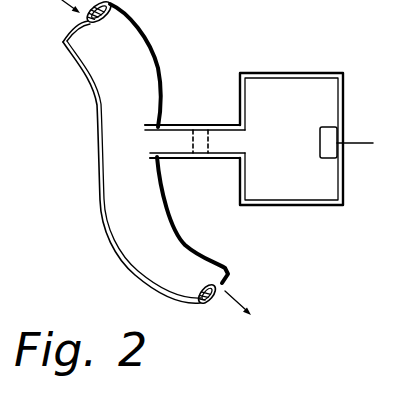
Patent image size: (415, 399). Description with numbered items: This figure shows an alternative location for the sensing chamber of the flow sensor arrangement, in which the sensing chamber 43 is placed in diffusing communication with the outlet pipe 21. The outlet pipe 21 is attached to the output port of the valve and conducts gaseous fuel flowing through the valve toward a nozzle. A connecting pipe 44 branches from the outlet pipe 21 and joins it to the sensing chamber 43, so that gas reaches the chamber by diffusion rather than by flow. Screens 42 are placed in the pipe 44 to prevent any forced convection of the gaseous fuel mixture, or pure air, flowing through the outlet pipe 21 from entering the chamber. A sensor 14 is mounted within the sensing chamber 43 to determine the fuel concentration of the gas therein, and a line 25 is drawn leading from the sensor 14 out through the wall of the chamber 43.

The outlet pipe 21 is at (100, 153).
The screens 42 is at (215, 158).
The pipe 44 is at (226, 124).
The sensing chamber 43 is at (292, 208).
The sensor 14 is at (338, 150).
The connecting lead 25 is at (358, 143).